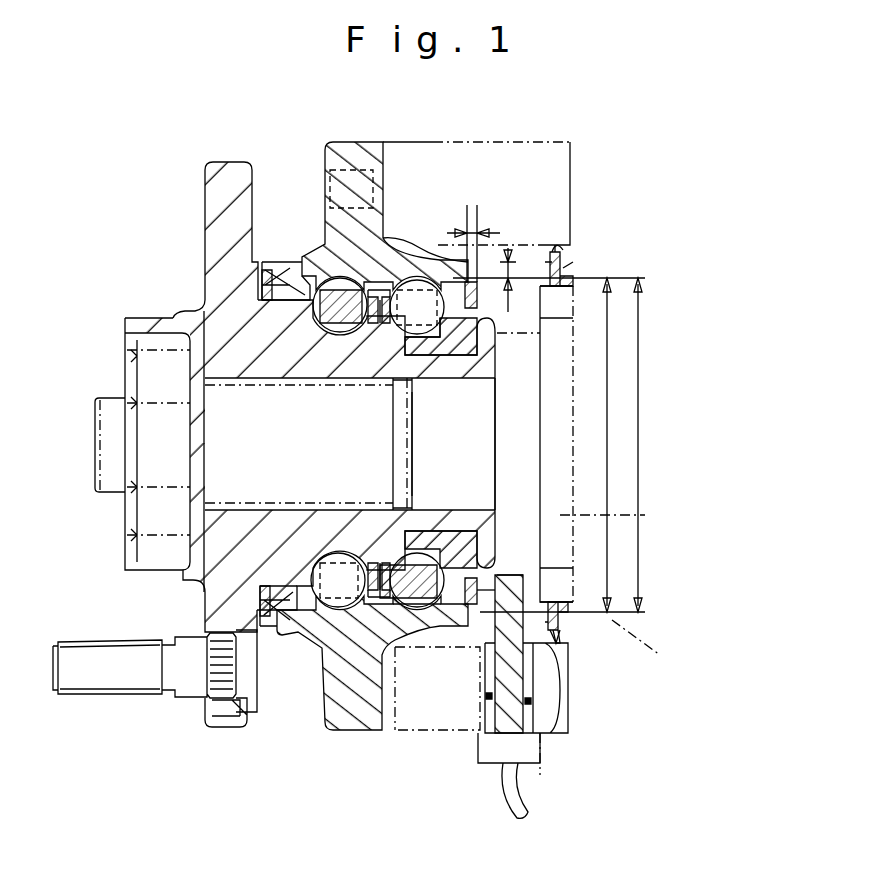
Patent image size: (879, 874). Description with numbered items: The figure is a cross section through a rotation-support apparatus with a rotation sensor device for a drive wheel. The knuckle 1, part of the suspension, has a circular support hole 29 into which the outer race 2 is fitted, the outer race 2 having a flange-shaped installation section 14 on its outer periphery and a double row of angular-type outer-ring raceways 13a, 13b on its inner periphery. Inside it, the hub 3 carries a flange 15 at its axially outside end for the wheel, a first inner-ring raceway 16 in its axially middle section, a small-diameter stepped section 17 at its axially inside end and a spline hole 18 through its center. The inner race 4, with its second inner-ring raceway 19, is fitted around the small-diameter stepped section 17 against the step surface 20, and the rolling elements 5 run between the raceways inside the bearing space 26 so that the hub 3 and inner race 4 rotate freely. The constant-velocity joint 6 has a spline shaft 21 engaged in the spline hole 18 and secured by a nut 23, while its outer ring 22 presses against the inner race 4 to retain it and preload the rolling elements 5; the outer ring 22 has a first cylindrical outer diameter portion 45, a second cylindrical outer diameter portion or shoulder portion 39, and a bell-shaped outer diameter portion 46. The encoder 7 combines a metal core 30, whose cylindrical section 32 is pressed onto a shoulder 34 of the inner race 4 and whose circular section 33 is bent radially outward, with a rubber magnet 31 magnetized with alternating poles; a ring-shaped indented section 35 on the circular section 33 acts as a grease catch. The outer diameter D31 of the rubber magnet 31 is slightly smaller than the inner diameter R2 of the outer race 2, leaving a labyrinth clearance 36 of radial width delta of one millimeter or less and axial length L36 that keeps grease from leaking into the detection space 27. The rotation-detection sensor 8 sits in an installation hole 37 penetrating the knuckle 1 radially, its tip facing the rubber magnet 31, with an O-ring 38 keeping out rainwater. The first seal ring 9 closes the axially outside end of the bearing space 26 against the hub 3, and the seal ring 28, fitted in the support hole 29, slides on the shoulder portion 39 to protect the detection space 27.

The knuckle 1 is at (498, 148).
The outer race 2 is at (366, 640).
The hub 3 is at (212, 345).
The inner race 4 is at (485, 348).
The rolling elements 5 is at (322, 262).
The constant-velocity joint 6 is at (645, 625).
The encoder 7 is at (525, 333).
The rotation-detection sensor 8 is at (531, 678).
The first seal ring 9 is at (268, 282).
The outer-ring raceway 13a is at (410, 607).
The outer-ring raceway 13b is at (290, 640).
The installation section 14 is at (355, 145).
The hub flange 15 is at (220, 190).
The first inner-ring raceway 16 is at (237, 392).
The small-diameter stepped section 17 is at (455, 345).
The spline hole 18 is at (258, 485).
The second inner-ring raceway 19 is at (450, 540).
The step surface 20 is at (418, 360).
The spline shaft 21 is at (180, 572).
The outer ring for the constant-velocity joint 22 is at (645, 515).
The nut 23 is at (150, 380).
The bearing space 26 is at (385, 320).
The detection space 27 is at (543, 302).
The seal ring 28 is at (565, 262).
The support hole 29 is at (550, 250).
The metal core 30 is at (523, 562).
The rubber magnet 31 is at (497, 578).
The cylindrical section 32 is at (445, 598).
The circular section 33 is at (560, 600).
The shoulder 34 is at (440, 345).
The ring-shaped indented section 35 is at (440, 285).
The labyrinth clearance 36 is at (462, 283).
The installation hole 37 is at (545, 775).
The O-ring 38 is at (490, 700).
The second cylindrical outer diameter portion 39 is at (575, 615).
The first cylindrical outer diameter portion 45 is at (540, 538).
The bell-shaped outer diameter portion 46 is at (583, 280).
The inner diameter of the outer race R2 is at (640, 353).
The outer diameter of the rubber magnet D31 is at (608, 478).
The length of the labyrinth clearance L36 is at (474, 205).
The width of the labyrinth clearance delta is at (510, 262).